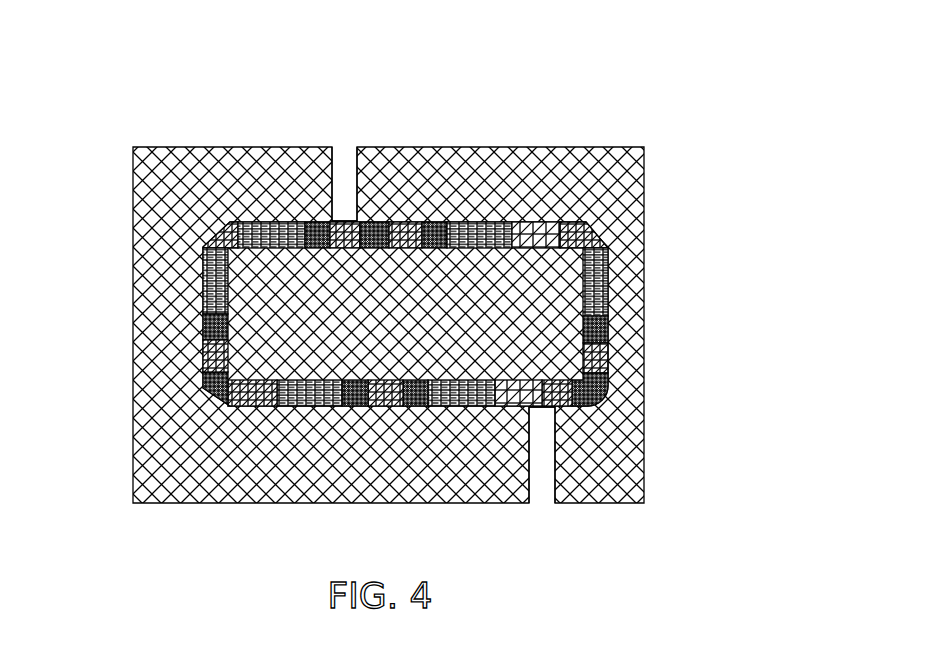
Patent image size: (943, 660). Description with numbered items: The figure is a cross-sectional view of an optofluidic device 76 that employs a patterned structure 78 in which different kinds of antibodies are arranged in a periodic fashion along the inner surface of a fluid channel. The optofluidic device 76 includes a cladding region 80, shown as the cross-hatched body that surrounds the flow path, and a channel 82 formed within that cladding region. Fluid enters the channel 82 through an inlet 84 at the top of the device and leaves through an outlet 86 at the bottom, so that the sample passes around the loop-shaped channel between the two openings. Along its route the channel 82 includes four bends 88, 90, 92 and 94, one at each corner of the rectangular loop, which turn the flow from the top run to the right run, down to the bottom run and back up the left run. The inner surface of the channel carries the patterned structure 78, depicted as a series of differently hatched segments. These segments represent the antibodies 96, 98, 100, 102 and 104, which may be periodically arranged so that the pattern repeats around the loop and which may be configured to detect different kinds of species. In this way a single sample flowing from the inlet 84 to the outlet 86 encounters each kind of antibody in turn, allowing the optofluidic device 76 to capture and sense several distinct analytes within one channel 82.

The optofluidic device 76 is at (415, 307).
The patterned structure 78 is at (608, 283).
The cladding region 80 is at (563, 153).
The channel 82 is at (613, 207).
The inlet 84 is at (343, 158).
The outlet 86 is at (547, 492).
The bend 88 is at (213, 227).
The bend 90 is at (613, 236).
The bend 92 is at (626, 418).
The bend 94 is at (178, 427).
The antibodies 96 is at (265, 228).
The antibodies 98 is at (325, 226).
The antibodies 100 is at (365, 224).
The antibodies 102 is at (398, 222).
The antibodies 104 is at (530, 224).